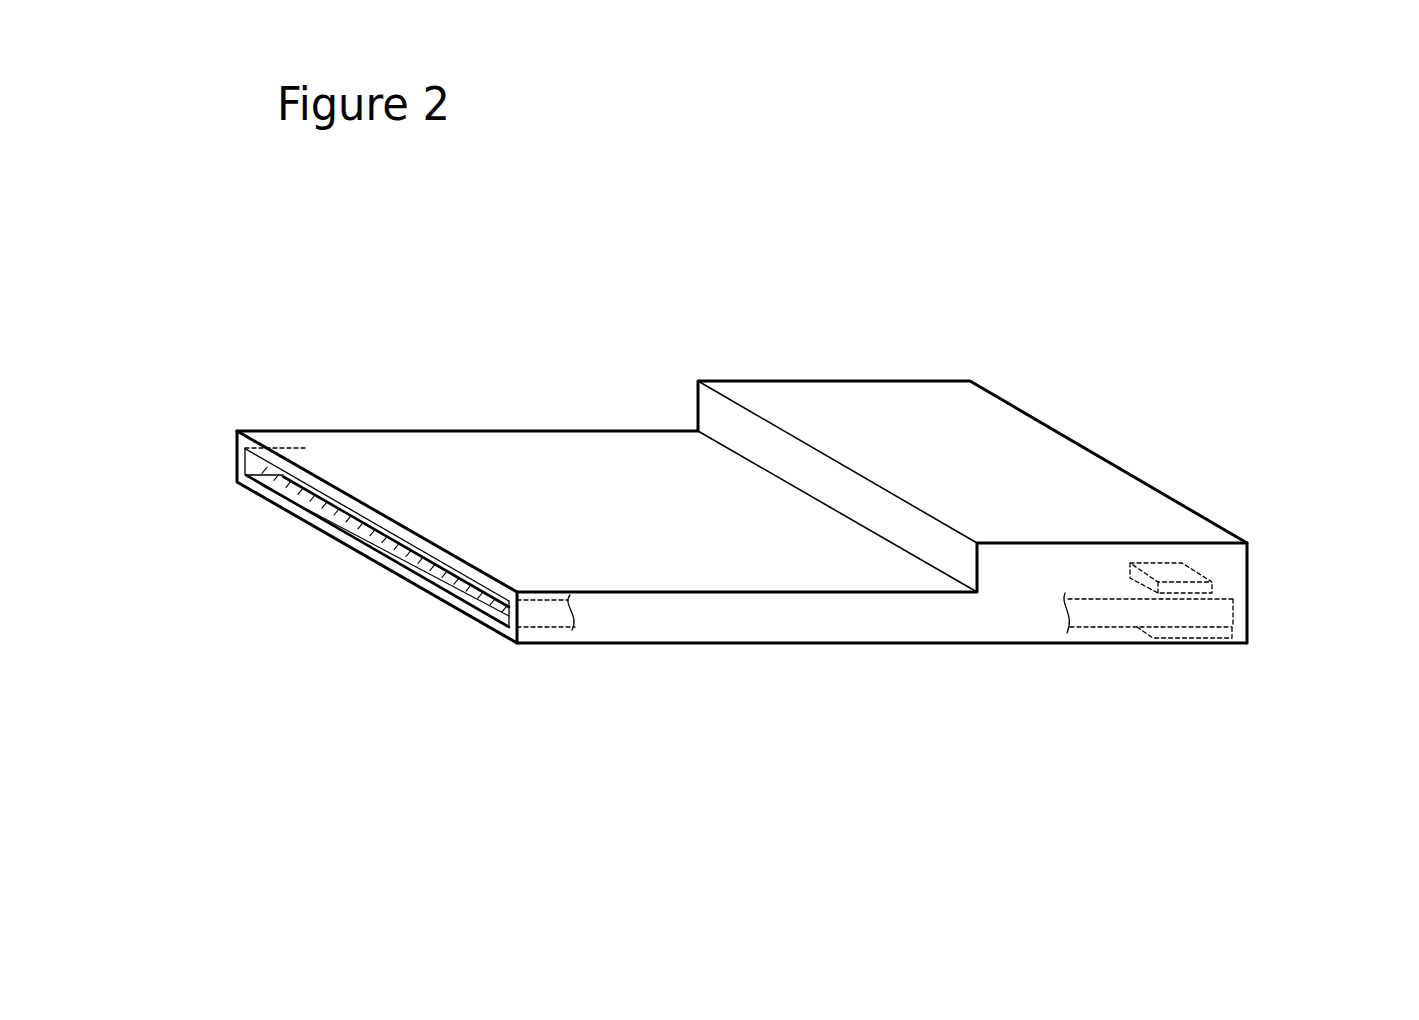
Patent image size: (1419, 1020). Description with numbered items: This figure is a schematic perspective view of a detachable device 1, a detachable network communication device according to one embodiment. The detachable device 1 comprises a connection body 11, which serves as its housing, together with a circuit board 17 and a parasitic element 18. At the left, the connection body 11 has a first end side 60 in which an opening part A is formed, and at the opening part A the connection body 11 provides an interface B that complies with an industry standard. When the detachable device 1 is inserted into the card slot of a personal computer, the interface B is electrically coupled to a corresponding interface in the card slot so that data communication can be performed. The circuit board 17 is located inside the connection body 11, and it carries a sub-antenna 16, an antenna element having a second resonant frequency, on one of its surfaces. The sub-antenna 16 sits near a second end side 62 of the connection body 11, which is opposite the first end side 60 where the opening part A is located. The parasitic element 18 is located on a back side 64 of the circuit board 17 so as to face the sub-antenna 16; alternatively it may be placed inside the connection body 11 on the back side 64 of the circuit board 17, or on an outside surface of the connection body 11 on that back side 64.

The detachable device 1 is at (1003, 270).
The connection body 11 is at (610, 440).
The sub-antenna 16 is at (1212, 585).
The circuit board 17 is at (1110, 617).
The parasitic element 18 is at (1203, 633).
The first end side 60 is at (326, 507).
The second end side 62 is at (1234, 654).
The back side 64 is at (1003, 647).
The opening part A is at (245, 484).
The interface B is at (368, 533).